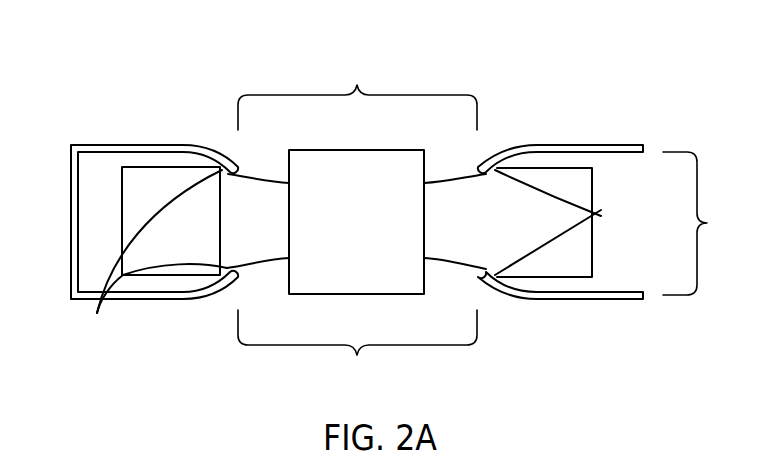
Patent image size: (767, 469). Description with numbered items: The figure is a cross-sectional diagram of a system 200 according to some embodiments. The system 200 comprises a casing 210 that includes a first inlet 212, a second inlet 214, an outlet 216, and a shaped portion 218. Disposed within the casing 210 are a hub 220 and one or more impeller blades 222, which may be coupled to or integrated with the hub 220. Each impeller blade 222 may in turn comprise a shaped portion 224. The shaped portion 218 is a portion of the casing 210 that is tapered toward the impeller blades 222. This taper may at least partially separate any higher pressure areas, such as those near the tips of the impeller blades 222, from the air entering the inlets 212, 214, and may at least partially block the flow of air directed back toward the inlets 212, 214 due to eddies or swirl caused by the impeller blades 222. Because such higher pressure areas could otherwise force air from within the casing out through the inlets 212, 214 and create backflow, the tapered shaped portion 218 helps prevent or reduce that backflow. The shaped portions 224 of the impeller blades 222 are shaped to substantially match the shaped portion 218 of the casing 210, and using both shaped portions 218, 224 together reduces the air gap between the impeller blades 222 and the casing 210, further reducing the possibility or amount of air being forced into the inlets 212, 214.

The system 200 is at (67, 76).
The casing 210 is at (100, 145).
The first inlet 212 is at (357, 86).
The second inlet 214 is at (357, 354).
The outlet 216 is at (707, 223).
The shaped portion 218 is at (231, 164).
The hub 220 is at (337, 150).
The impeller blades 222 is at (121, 221).
The shaped portion 224 is at (617, 213).